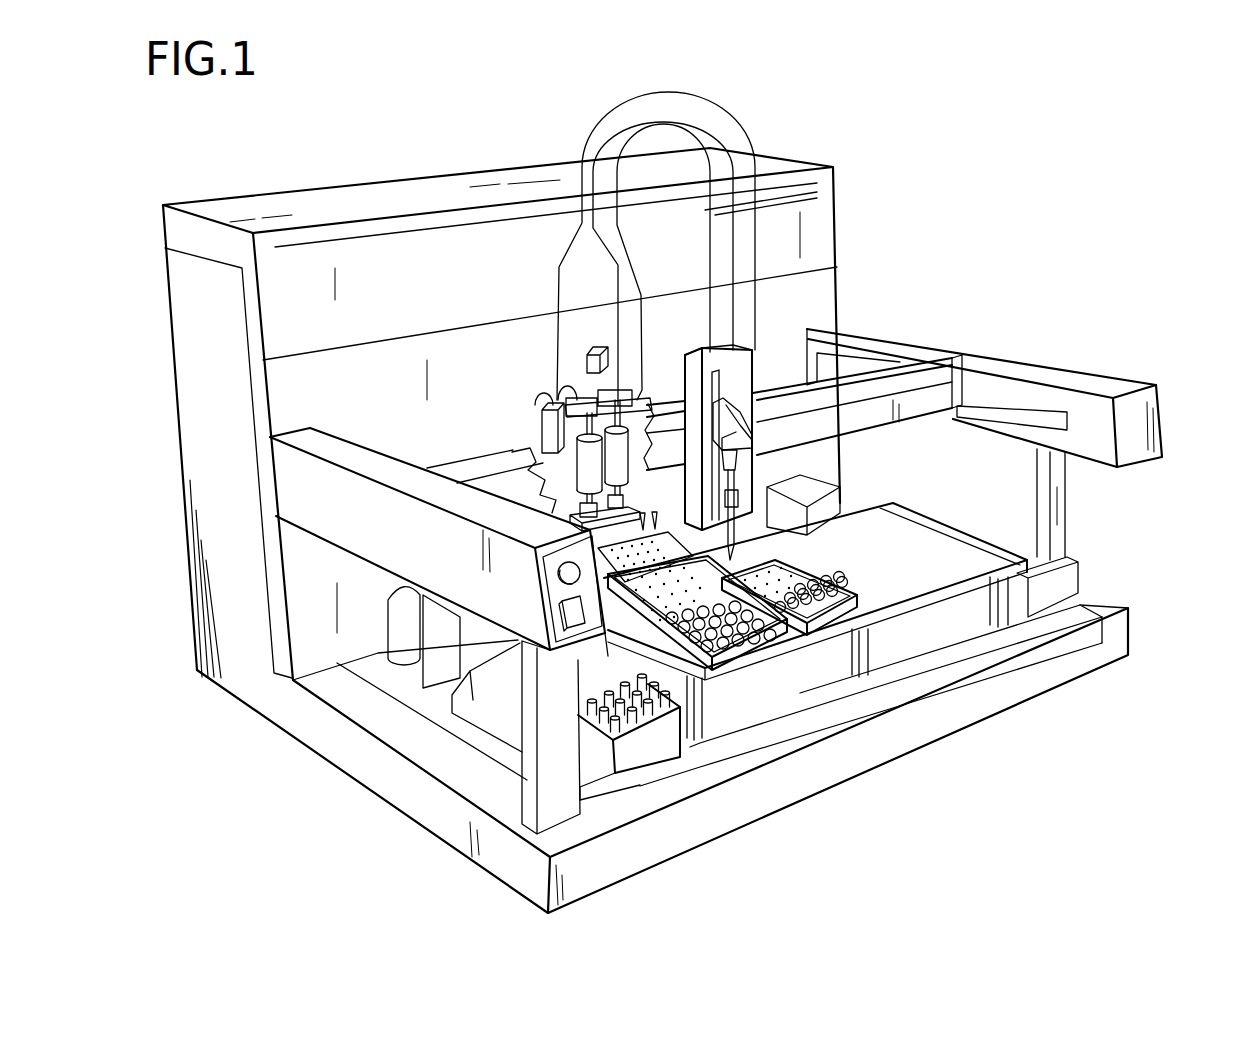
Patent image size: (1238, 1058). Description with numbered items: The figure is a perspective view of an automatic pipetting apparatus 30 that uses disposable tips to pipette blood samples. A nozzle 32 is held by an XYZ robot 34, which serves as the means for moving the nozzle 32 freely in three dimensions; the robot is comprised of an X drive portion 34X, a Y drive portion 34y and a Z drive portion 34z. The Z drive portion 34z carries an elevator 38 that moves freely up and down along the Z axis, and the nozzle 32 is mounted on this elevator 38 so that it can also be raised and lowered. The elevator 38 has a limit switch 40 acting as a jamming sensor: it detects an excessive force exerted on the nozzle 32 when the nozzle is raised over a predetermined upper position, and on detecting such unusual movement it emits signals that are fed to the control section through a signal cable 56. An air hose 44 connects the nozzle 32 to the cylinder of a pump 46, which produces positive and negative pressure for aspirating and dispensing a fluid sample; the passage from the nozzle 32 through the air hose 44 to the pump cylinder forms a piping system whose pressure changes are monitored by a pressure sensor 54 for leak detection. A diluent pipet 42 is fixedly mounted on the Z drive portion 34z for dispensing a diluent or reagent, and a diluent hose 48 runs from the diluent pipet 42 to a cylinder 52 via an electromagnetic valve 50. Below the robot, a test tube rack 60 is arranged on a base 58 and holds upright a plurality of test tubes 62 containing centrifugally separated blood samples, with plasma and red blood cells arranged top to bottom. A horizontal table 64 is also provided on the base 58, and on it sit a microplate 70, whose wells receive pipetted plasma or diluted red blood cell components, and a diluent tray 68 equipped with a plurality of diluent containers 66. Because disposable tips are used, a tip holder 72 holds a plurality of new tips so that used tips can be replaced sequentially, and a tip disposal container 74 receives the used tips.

The automatic pipetting apparatus 30 is at (986, 228).
The nozzle 32 is at (745, 525).
The XYZ robot 34 is at (913, 367).
The X drive portion 34X is at (1075, 375).
The Y drive portion 34y is at (822, 385).
The Z drive portion 34z is at (705, 353).
The elevator 38 is at (688, 375).
The limit switch 40 is at (760, 432).
The diluent pipet 42 is at (770, 520).
The air hose 44 is at (600, 142).
The pump 46 is at (632, 500).
The diluent hose 48 is at (618, 108).
The electromagnetic valve 50 is at (545, 420).
The cylinder 52 is at (580, 468).
The pressure sensor 54 is at (594, 342).
The signal cable 56 is at (718, 140).
The base 58 is at (967, 637).
The test tube rack 60 is at (665, 745).
The test tubes 62 is at (588, 735).
The horizontal table 64 is at (883, 600).
The diluent containers 66 is at (708, 648).
The diluent tray 68 is at (752, 668).
The microplate 70 is at (806, 625).
The tip holder 72 is at (668, 556).
The tip disposal container 74 is at (828, 480).